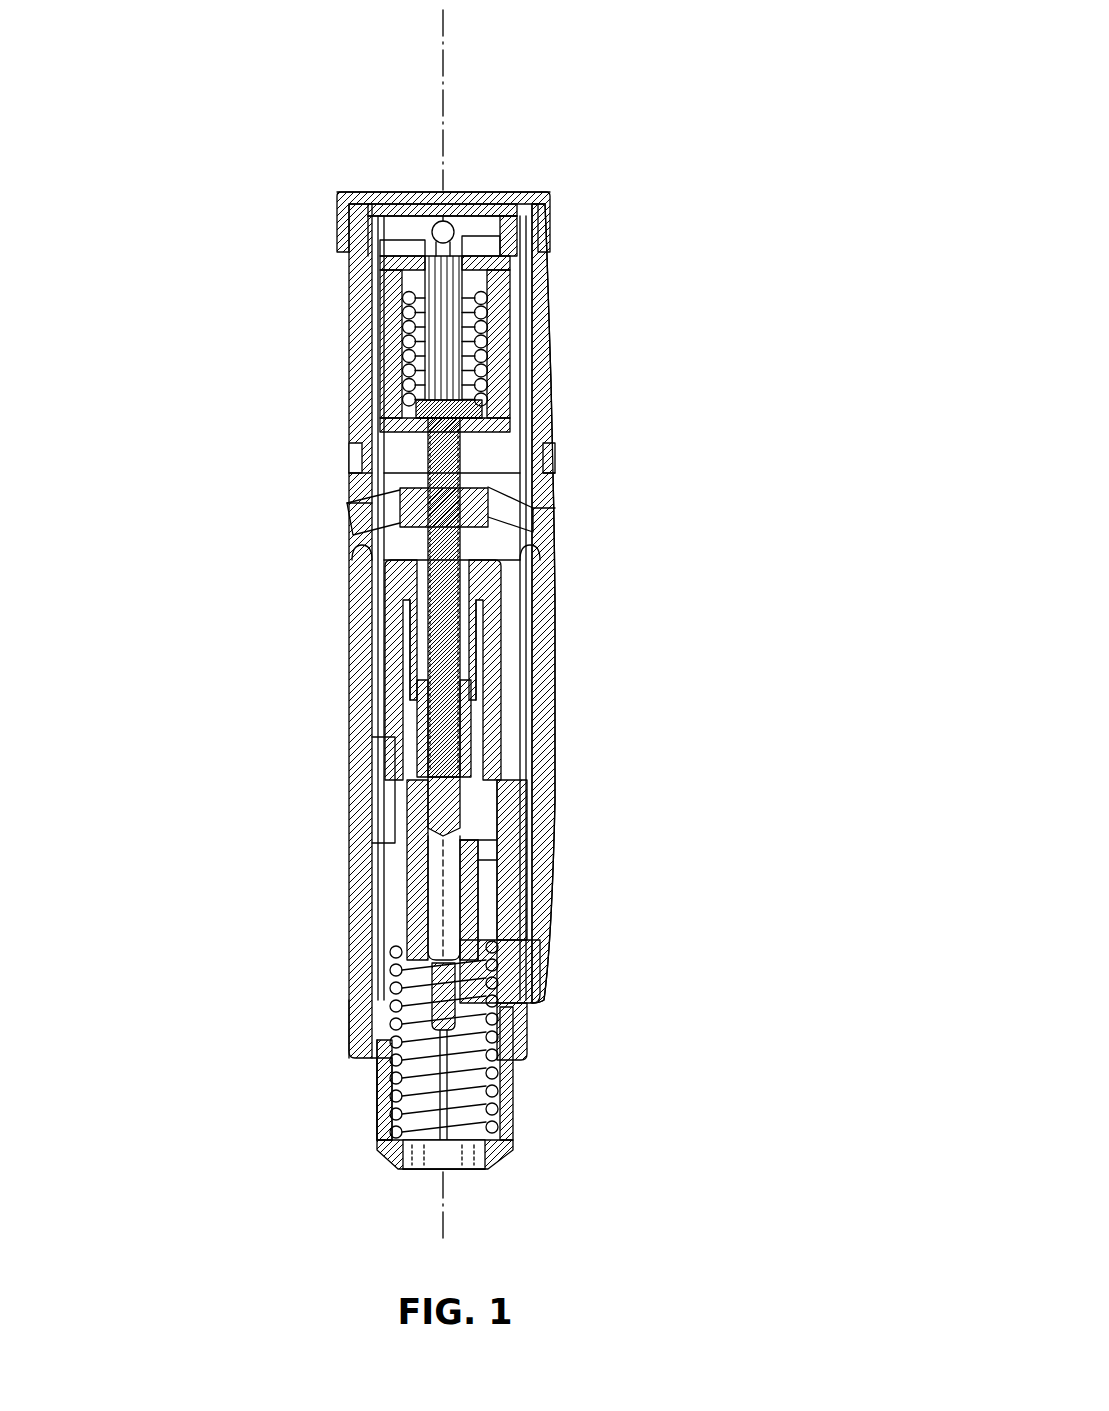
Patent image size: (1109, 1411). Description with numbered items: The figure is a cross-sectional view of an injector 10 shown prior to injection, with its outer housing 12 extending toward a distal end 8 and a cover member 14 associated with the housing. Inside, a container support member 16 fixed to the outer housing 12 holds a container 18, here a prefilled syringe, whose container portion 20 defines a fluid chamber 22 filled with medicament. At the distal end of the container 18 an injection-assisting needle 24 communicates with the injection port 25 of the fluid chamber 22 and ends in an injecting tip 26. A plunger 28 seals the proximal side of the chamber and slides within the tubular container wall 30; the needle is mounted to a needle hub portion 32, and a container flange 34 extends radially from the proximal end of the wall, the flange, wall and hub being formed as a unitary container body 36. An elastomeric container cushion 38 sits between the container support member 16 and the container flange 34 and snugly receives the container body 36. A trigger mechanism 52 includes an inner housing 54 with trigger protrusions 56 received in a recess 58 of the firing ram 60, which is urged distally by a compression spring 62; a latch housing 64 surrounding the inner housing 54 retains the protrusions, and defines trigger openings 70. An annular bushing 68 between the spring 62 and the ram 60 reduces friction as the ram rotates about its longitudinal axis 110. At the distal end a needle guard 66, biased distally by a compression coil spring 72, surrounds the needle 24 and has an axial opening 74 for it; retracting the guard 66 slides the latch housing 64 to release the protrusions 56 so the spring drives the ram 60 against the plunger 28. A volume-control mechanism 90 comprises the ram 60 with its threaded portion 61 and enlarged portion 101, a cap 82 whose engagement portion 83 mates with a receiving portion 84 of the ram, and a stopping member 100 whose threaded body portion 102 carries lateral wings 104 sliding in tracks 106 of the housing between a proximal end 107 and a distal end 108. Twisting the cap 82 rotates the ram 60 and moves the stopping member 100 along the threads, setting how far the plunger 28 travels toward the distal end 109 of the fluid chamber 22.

The distal end 8 is at (328, 1007).
The injector 10 is at (782, 119).
The outer housing 12 is at (535, 365).
The cover member 14 is at (540, 862).
The container support member 16 is at (508, 612).
The container 18 is at (470, 892).
The container portion 20 is at (420, 925).
The fluid chamber 22 is at (430, 880).
The injection-assisting needle 24 is at (510, 1085).
The injection port 25 is at (500, 1010).
The injecting tip 26 is at (490, 1143).
The plunger 28 is at (450, 803).
The container wall 30 is at (428, 832).
The needle hub portion 32 is at (500, 1022).
The container flange 34 is at (507, 580).
The container body 36 is at (505, 672).
The container cushion 38 is at (405, 640).
The trigger mechanism 52 is at (550, 218).
The inner housing 54 is at (468, 400).
The trigger protrusions 56 is at (512, 247).
The recess 58 is at (427, 253).
The firing ram 60 is at (458, 480).
The threaded portion 61 is at (462, 727).
The compression spring 62 is at (487, 300).
The latch housing 64 is at (470, 265).
The needle guard 66 is at (400, 1130).
The annular bushing 68 is at (482, 410).
The trigger openings 70 is at (380, 240).
The compression coil spring 72 is at (378, 1070).
The axial opening 74 is at (472, 1170).
The cap 82 is at (465, 192).
The engagement portion 83 is at (505, 192).
The receiving portion 84 is at (548, 192).
The volume-control mechanism 90 is at (417, 462).
The stopping member 100 is at (480, 518).
The enlarged portion 101 is at (417, 417).
The body portion 102 is at (400, 510).
The lateral wings 104 is at (533, 520).
The tracks 106 is at (353, 472).
The proximal end 107 is at (350, 455).
The distal end 108 is at (555, 553).
The distal end 109 is at (510, 960).
The longitudinal axis 110 is at (443, 65).